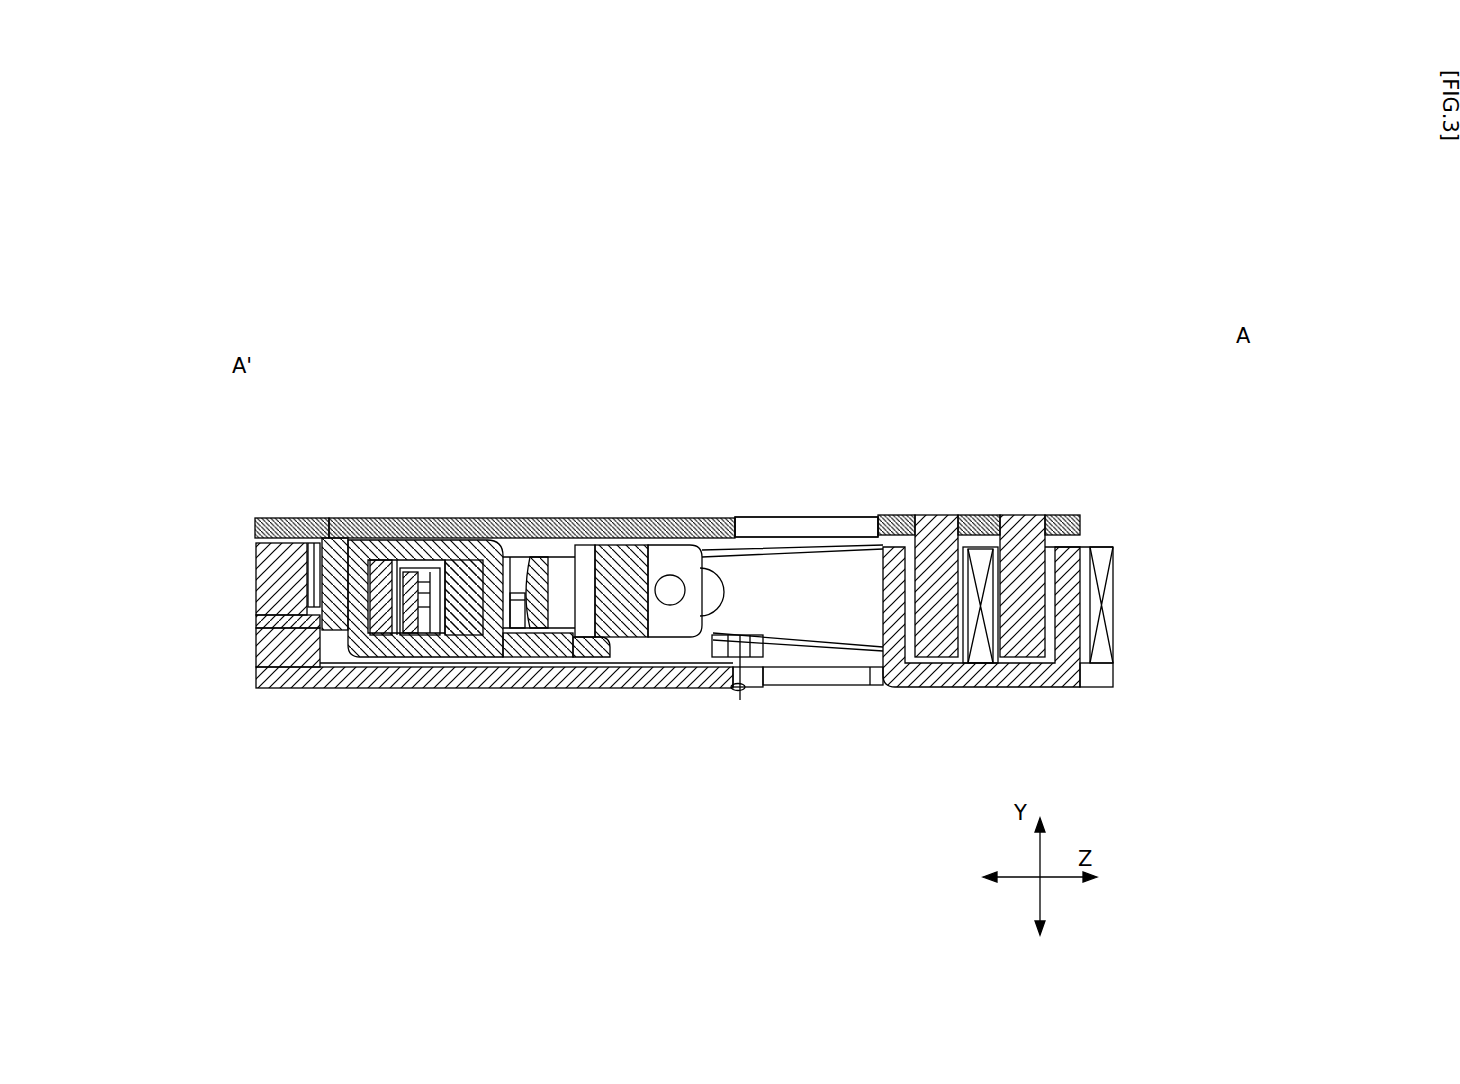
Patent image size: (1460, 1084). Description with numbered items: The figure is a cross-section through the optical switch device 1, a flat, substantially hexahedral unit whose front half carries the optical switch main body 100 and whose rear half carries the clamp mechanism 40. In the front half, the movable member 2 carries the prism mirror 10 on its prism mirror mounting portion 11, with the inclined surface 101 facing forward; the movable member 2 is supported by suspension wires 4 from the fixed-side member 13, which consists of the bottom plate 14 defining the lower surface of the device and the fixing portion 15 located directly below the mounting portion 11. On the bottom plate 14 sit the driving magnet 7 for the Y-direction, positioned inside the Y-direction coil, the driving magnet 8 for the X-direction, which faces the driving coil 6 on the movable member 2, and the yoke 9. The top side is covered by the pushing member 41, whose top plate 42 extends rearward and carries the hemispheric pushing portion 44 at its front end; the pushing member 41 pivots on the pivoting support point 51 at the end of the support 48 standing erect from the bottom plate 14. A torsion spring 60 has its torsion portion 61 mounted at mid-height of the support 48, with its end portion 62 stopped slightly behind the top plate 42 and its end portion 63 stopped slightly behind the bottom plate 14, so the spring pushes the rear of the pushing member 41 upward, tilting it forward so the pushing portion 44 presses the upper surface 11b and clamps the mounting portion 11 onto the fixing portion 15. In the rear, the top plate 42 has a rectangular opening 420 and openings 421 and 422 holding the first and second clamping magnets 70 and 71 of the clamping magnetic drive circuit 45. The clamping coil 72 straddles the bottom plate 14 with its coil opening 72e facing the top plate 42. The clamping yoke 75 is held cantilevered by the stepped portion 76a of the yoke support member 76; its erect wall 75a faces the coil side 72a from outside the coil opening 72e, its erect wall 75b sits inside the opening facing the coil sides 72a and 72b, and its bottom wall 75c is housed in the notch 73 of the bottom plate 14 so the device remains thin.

The optical switch device 1 is at (842, 338).
The optical switch main body 100 is at (226, 520).
The prism mirror 10 is at (256, 562).
The inclined surface 101 is at (256, 585).
The prism mirror mounting portion 11 is at (292, 634).
The upper surface 11b is at (290, 518).
The fixing portion 15 is at (257, 660).
The movable member 2 is at (489, 753).
The fixed-side member 13 is at (494, 725).
The bottom plate 14 is at (330, 672).
The pushing portion 44 is at (330, 540).
The yoke 9 is at (435, 540).
The driving magnet 8 is at (375, 640).
The driving coil 6 is at (412, 640).
The driving magnet 7 is at (455, 640).
The suspension wire 4 is at (565, 622).
The torsion portion 61 is at (700, 640).
The support 48 is at (690, 545).
The pivoting support point 51 is at (670, 575).
The pushing member 41 is at (603, 489).
The top plate 42 is at (545, 538).
The torsion spring 60 is at (808, 515).
The end portion 62 is at (905, 515).
The end portion 63 is at (775, 515).
The rectangular opening 420 is at (796, 515).
The opening 421 is at (975, 515).
The opening 422 is at (1050, 520).
The clamp mechanism 40 is at (1040, 470).
The first clamping magnet 70 is at (932, 515).
The second clamping magnet 71 is at (1008, 515).
The clamping coil 72 is at (1106, 597).
The coil side 72a is at (978, 660).
The coil side 72b is at (1100, 565).
The coil opening 72e is at (1080, 517).
The clamping yoke 75 is at (1017, 634).
The erect wall 75a is at (883, 600).
The erect wall 75b is at (1062, 565).
The bottom wall 75c is at (905, 680).
The yoke support member 76 is at (775, 660).
The stepped portion 76a is at (872, 688).
The notch 73 is at (800, 675).
The clamping magnetic drive circuit 45 is at (1045, 712).